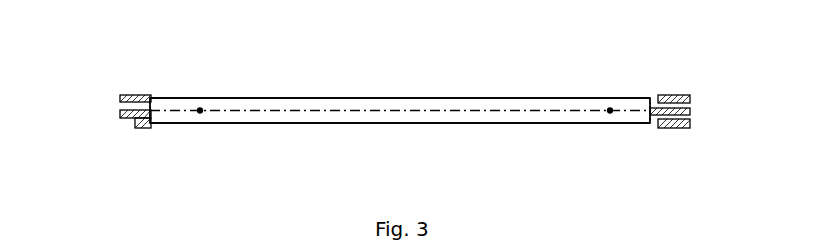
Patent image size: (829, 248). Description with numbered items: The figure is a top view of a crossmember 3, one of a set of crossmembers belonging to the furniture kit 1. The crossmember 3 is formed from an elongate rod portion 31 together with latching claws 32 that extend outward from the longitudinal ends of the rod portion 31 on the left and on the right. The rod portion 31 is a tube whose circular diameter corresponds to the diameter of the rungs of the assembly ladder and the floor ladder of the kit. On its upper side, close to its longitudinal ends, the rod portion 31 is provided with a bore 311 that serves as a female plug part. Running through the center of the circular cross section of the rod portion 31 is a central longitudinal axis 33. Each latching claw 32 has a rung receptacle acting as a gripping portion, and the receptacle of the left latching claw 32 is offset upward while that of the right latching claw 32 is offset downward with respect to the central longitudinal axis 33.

The furniture kit 1 is at (160, 84).
The crossmember 3 is at (440, 90).
The rod portion 31 is at (305, 98).
The bore 311 is at (610, 108).
The latching claw 32 is at (674, 106).
The central longitudinal axis 33 is at (208, 109).